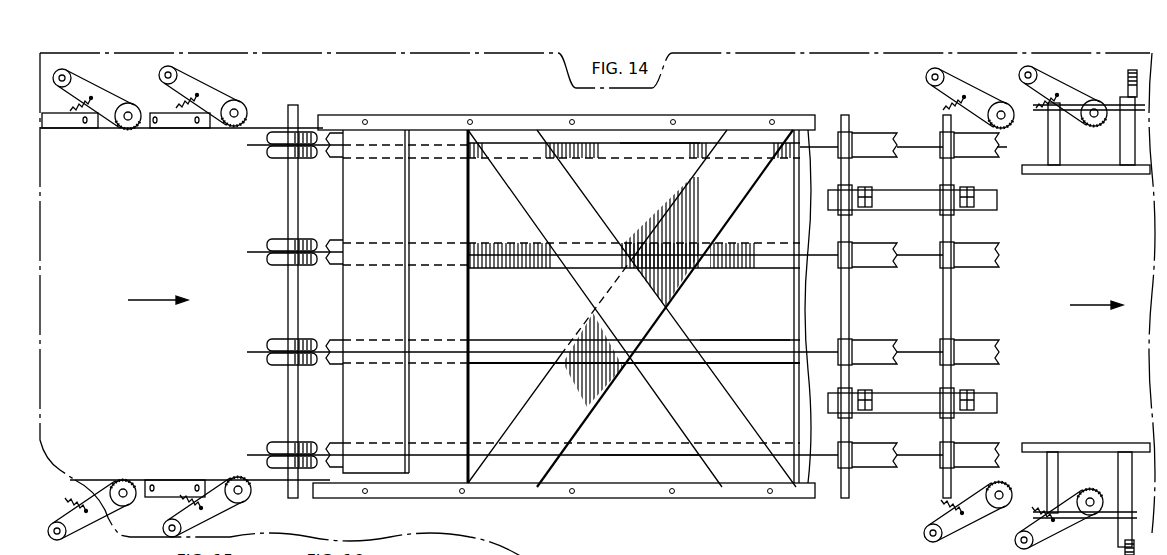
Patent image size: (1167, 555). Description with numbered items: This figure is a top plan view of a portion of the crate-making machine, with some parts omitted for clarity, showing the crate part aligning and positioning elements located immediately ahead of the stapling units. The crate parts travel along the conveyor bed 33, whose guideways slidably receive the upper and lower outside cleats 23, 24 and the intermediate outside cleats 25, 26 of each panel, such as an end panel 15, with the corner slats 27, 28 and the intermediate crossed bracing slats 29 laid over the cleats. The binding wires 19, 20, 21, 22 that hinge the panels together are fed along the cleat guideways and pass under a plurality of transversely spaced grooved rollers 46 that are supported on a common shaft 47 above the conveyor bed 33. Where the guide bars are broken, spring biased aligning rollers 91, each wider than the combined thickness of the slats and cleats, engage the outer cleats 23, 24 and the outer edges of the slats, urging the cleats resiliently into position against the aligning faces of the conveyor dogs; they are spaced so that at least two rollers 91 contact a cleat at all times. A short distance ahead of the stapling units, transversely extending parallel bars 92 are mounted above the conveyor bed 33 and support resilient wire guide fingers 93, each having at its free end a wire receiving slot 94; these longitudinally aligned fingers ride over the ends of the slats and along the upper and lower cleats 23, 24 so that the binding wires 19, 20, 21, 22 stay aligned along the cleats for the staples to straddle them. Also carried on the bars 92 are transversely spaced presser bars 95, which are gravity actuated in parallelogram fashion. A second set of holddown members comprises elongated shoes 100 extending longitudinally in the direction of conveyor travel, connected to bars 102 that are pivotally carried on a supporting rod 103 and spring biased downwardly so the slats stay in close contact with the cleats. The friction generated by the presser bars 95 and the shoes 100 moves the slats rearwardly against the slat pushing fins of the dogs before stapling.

The conveyor bed 33 is at (770, 76).
The spring biased aligning rollers 91 is at (232, 134).
The common shaft 47 is at (300, 110).
The grooved rollers 46 is at (278, 244).
The corner slat 28 is at (463, 299).
The corner slat 27 is at (797, 300).
The intermediate crossed bracing slats 29 is at (676, 193).
The binding wire 19 is at (595, 156).
The resilient wire guide fingers 93 is at (944, 152).
The binding wire 20 is at (505, 248).
The wire receiving slot 94 is at (998, 252).
The intermediate outside cleat 25 is at (752, 267).
The upper outside cleat 23 is at (655, 165).
The binding wire 21 is at (528, 346).
The intermediate outside cleat 26 is at (748, 346).
The binding wire 22 is at (485, 445).
The lower outside cleat 24 is at (655, 450).
The transversely extending parallel bars 92 is at (940, 290).
The presser bars 95 is at (903, 202).
The elongated shoes 100 is at (1107, 175).
The bars 102 is at (1128, 174).
The supporting rod 103 is at (1112, 88).
The end panel 15 is at (1045, 552).